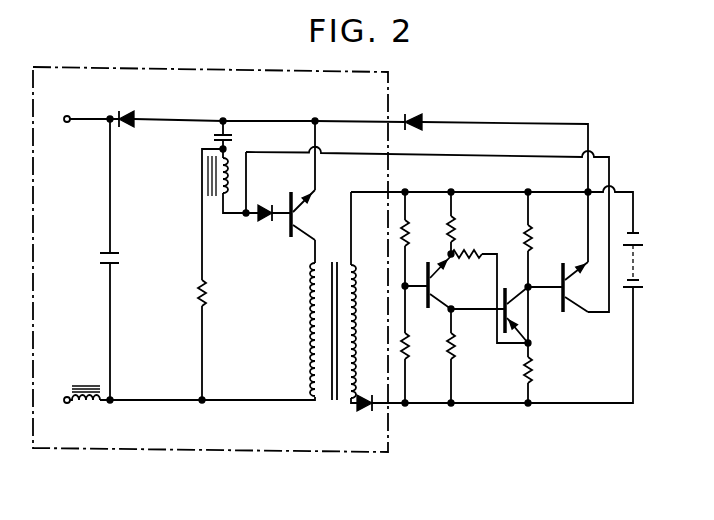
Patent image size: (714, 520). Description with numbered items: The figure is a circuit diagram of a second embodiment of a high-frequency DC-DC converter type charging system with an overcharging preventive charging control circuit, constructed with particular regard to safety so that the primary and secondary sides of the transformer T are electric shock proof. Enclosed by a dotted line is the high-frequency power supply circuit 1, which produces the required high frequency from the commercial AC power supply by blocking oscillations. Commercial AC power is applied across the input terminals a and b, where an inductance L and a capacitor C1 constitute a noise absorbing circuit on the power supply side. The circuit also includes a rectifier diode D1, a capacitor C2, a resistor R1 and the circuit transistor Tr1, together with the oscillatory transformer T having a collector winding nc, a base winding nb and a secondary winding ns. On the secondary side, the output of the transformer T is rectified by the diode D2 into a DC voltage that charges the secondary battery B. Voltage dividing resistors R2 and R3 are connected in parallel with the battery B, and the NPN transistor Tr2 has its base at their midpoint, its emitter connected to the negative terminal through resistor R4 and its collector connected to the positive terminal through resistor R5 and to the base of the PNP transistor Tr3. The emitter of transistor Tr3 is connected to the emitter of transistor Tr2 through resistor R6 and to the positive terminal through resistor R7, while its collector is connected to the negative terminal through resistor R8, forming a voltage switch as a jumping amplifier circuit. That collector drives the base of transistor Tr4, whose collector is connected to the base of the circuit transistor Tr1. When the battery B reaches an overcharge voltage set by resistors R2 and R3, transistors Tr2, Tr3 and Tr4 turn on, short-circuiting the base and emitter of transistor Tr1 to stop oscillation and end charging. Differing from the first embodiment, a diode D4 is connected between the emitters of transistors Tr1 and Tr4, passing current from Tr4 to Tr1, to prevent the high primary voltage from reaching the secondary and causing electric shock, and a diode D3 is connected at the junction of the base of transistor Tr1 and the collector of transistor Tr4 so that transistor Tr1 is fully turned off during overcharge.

The high-frequency power supply circuit 1 is at (277, 453).
The input terminal a is at (78, 119).
The input terminal b is at (58, 400).
The inductance L is at (80, 407).
The capacitor C1 is at (120, 259).
The capacitor C2 is at (212, 134).
The rectifier diode D1 is at (128, 101).
The rectifier diode D2 is at (371, 412).
The diode D3 is at (265, 204).
The diode D4 is at (407, 111).
The resistor R1 is at (206, 288).
The voltage dividing resistor R2 is at (408, 230).
The voltage dividing resistor R3 is at (401, 347).
The resistor R4 is at (455, 232).
The resistor R5 is at (456, 351).
The resistor R6 is at (477, 250).
The resistor R7 is at (538, 372).
The resistor R8 is at (532, 228).
The circuit transistor Tr1 is at (297, 216).
The NPN transistor Tr2 is at (437, 285).
The PNP transistor Tr3 is at (513, 311).
The transistor Tr4 is at (571, 286).
The oscillatory transformer T is at (334, 403).
The base winding nb is at (220, 196).
The collector winding nc is at (308, 307).
The secondary winding ns is at (356, 293).
The secondary battery B is at (641, 260).